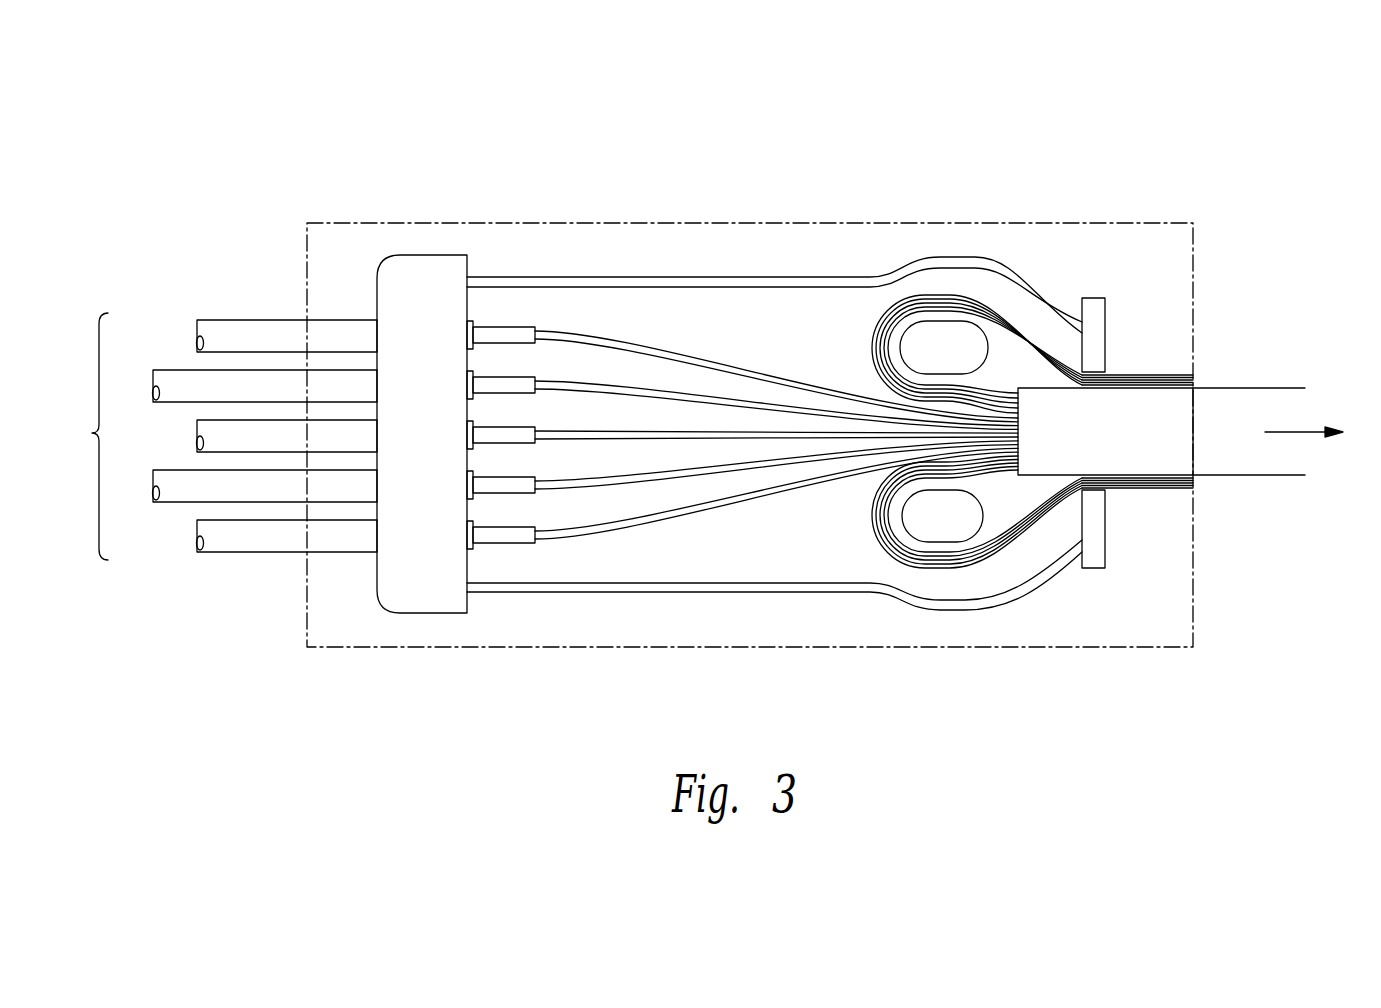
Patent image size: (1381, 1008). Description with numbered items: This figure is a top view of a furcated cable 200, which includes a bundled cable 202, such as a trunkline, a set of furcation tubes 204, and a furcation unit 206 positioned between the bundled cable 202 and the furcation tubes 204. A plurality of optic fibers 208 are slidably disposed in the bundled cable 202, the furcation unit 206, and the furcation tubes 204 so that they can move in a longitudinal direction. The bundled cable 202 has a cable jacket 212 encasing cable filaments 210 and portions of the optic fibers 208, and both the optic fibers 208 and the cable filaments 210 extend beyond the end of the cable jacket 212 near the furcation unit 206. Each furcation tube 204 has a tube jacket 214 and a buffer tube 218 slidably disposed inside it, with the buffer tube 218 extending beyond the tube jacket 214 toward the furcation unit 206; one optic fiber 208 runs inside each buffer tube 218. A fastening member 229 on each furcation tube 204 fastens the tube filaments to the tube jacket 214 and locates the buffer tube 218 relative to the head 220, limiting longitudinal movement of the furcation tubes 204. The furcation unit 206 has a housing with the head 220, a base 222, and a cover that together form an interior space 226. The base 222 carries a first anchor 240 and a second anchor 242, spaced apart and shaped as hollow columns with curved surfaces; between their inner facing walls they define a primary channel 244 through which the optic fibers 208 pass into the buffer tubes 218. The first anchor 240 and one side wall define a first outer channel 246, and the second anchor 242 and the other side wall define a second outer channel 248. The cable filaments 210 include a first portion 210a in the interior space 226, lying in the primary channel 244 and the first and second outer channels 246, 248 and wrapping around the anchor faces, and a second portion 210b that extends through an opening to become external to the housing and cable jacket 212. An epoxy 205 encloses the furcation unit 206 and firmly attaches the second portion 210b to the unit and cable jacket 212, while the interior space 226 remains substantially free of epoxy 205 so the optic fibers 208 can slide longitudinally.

The furcated cable 200 is at (1082, 105).
The bundled cable 202 is at (1255, 385).
The furcation tubes 204 is at (95, 433).
The epoxy 205 is at (1193, 583).
The furcation unit 206 is at (680, 268).
The optic fibers 208 is at (762, 490).
The cable filaments 210 is at (1133, 367).
The first portion of the cable filaments 210a is at (963, 398).
The second portion of the cable filaments 210b is at (1152, 477).
The cable jacket 212 is at (1270, 476).
The tube jacket 214 is at (230, 320).
The buffer tube 218 is at (525, 428).
The head 220 is at (427, 625).
The base 222 is at (606, 595).
The interior space 226 is at (641, 315).
The fastening member 229 is at (468, 332).
The first anchor 240 is at (970, 545).
The second anchor 242 is at (977, 327).
The primary channel 244 is at (873, 472).
The first outer channel 246 is at (945, 572).
The second outer channel 248 is at (938, 285).